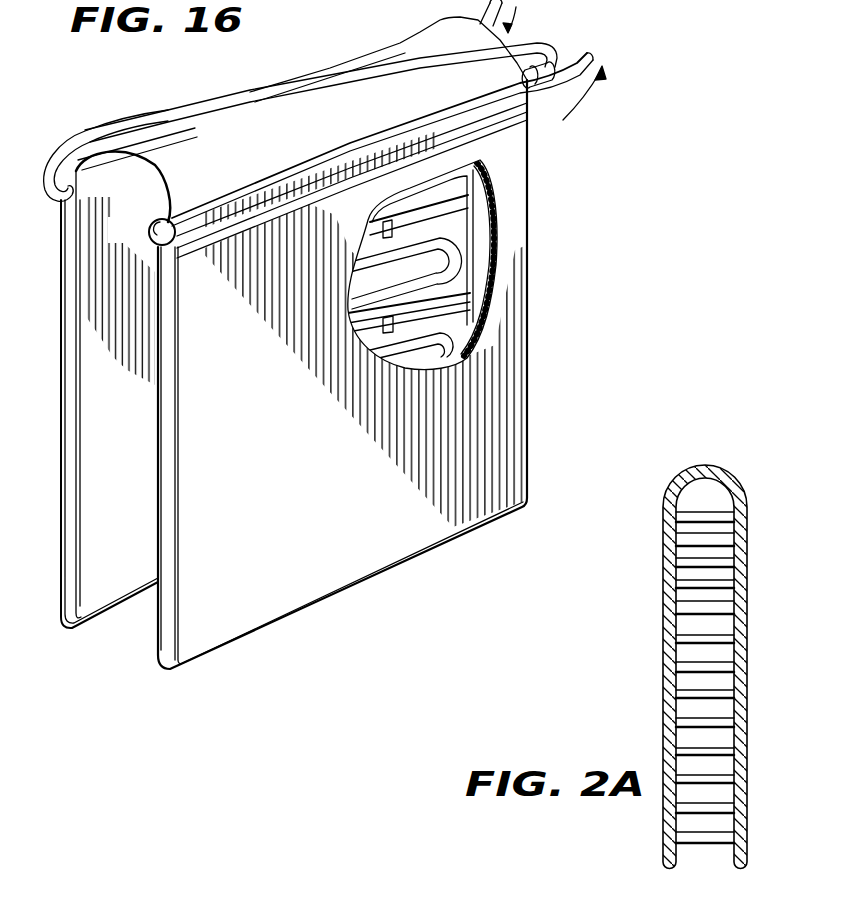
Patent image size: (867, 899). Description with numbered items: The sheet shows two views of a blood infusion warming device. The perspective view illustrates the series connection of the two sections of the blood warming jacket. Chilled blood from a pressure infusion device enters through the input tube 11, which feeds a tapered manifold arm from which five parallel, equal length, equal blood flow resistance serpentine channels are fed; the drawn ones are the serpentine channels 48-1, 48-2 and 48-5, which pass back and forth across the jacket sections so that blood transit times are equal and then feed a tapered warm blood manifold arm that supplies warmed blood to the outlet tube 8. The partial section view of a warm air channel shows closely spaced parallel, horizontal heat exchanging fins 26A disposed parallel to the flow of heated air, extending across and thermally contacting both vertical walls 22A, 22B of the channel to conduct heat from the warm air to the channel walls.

In FIG. 16, the outlet tube 8 is at (140, 236).
In FIG. 16, the input tube 11 is at (520, 70).
In FIG. 16, the serpentine channel 48-1 is at (453, 227).
In FIG. 16, the serpentine channel 48-2 is at (457, 320).
In FIG. 16, the serpentine channel 48-5 is at (485, 183).
In FIG. 2A, the warm air channel wall 22A is at (667, 528).
In FIG. 2A, the warm air channel wall 22B is at (747, 563).
In FIG. 2A, the heat exchanging fins 26A is at (723, 615).